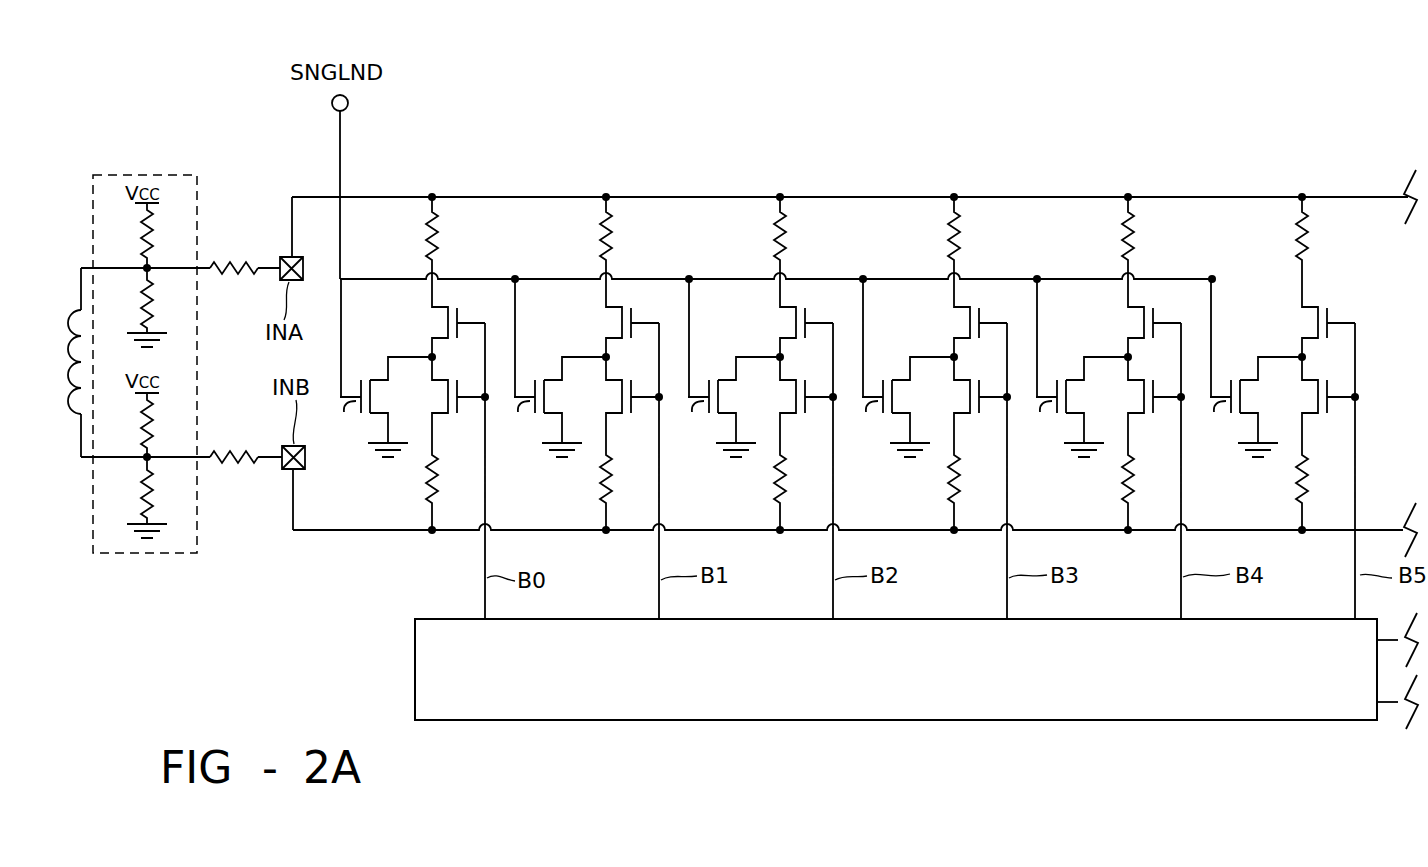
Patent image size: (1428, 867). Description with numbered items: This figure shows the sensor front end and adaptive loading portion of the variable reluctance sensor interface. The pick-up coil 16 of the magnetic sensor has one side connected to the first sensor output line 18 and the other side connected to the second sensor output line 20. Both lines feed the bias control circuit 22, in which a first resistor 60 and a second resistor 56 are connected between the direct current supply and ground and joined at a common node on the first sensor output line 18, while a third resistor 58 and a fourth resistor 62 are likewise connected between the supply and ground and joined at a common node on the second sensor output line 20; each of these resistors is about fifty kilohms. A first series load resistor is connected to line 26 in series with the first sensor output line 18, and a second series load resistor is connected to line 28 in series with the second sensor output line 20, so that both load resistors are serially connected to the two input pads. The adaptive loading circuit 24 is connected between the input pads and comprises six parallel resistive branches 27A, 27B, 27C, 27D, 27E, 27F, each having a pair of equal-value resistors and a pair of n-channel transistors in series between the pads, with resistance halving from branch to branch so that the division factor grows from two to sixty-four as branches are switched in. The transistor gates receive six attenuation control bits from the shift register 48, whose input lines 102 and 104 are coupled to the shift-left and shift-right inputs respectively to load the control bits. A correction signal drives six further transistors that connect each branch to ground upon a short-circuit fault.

The pick-up coil 16 is at (80, 316).
The first sensor output line 18 is at (81, 266).
The second sensor output line 20 is at (81, 459).
The bias control circuit 22 is at (176, 174).
The adaptive loading circuit 24 is at (895, 141).
The line 26 is at (204, 272).
The line 28 is at (205, 462).
The first resistive branch 27A is at (440, 203).
The second resistive branch 27B is at (612, 203).
The third resistive branch 27C is at (786, 203).
The fourth resistive branch 27D is at (962, 203).
The fifth resistive branch 27E is at (1136, 203).
The sixth resistive branch 27F is at (1310, 203).
The 6-bit shift register 48 is at (945, 721).
The second resistor 56 is at (152, 302).
The third resistor 58 is at (152, 410).
The first resistor 60 is at (150, 236).
The fourth resistor 62 is at (152, 486).
The input line 102 is at (1393, 634).
The input line 104 is at (1393, 705).